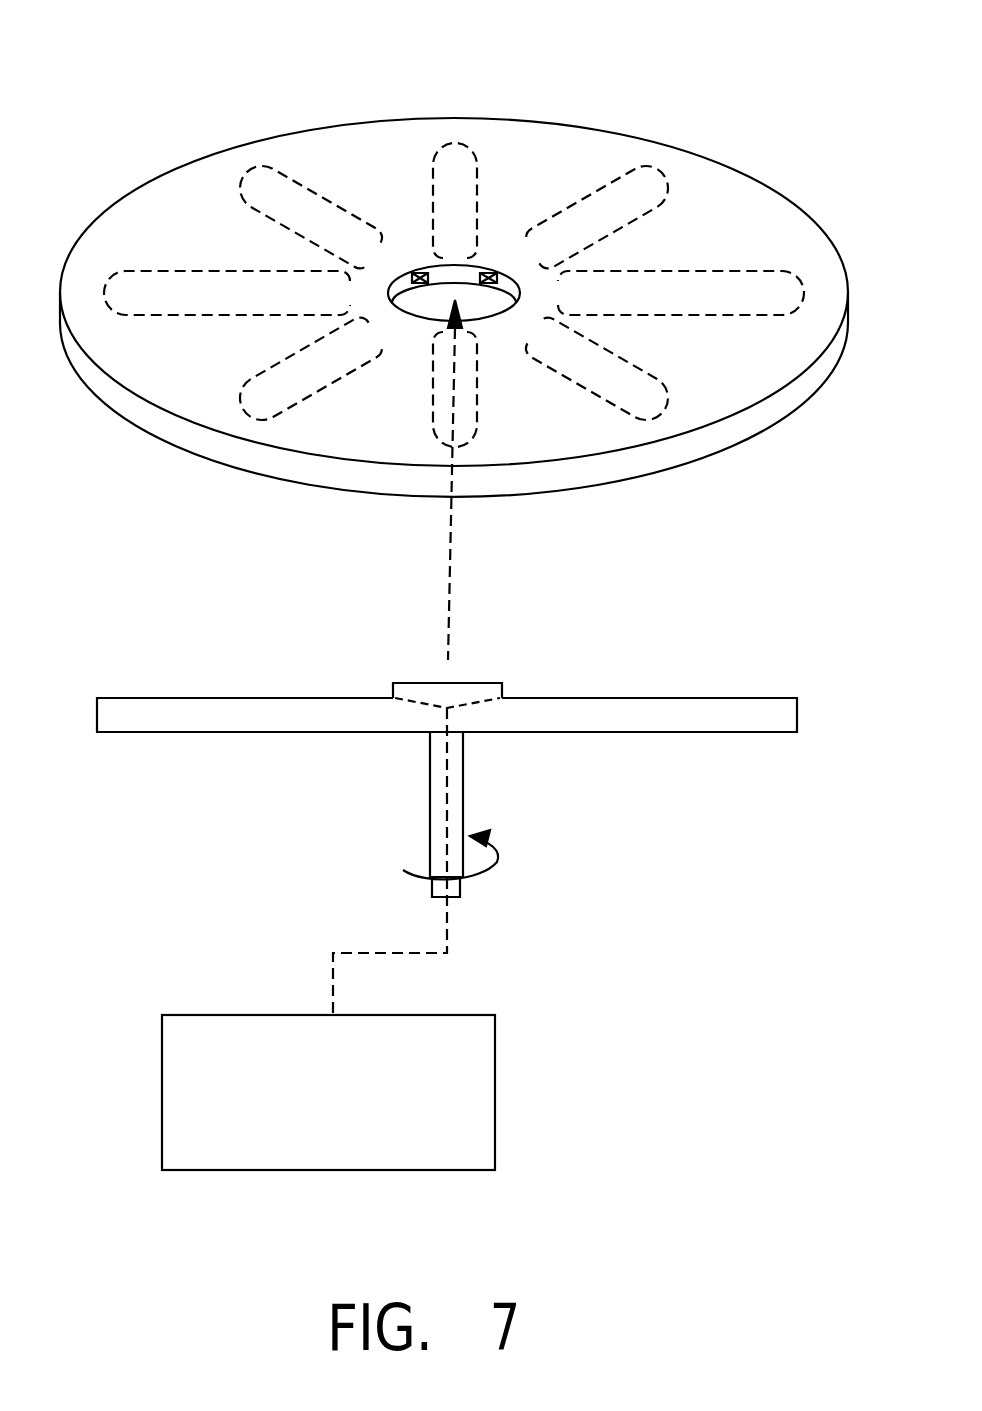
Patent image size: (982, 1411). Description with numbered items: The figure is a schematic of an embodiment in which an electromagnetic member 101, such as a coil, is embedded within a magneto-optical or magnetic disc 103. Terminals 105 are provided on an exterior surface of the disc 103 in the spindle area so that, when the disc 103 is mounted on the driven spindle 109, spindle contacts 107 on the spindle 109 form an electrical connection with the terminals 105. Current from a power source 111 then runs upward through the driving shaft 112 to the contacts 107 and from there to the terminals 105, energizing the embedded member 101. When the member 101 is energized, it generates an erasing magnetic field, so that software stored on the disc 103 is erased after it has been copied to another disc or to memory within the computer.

The electromagnetic member 101 is at (663, 272).
The magneto-optical or magnetic disc 103 is at (210, 177).
The terminals 105 is at (500, 267).
The spindle contacts 107 is at (377, 688).
The driven spindle 109 is at (693, 710).
The source 111 is at (490, 1043).
The driving shaft 112 is at (437, 788).